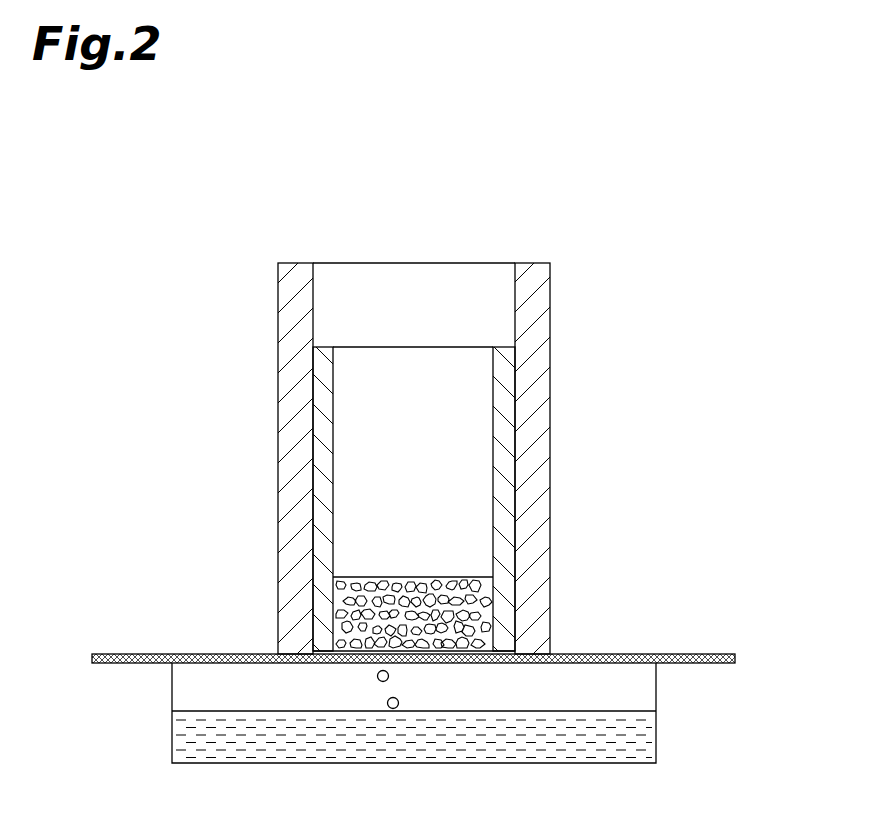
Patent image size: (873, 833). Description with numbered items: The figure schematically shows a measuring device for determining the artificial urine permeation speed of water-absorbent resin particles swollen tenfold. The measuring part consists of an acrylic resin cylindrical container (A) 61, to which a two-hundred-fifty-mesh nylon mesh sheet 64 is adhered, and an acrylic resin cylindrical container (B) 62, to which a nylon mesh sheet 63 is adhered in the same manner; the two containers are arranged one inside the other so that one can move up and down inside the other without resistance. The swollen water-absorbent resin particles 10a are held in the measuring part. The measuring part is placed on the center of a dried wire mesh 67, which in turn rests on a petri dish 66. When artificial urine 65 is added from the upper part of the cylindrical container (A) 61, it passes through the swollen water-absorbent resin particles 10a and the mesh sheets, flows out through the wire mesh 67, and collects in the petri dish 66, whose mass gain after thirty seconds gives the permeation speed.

The swollen water-absorbent resin particles 10a is at (330, 609).
The cylindrical container (A) 61 is at (505, 441).
The cylindrical container (B) 62 is at (553, 321).
The nylon mesh sheet 63 is at (522, 649).
The nylon mesh sheet (250 mesh) 64 is at (455, 577).
The artificial urine 65 is at (625, 732).
The petri dish 66 is at (656, 685).
The wire mesh 67 is at (698, 654).